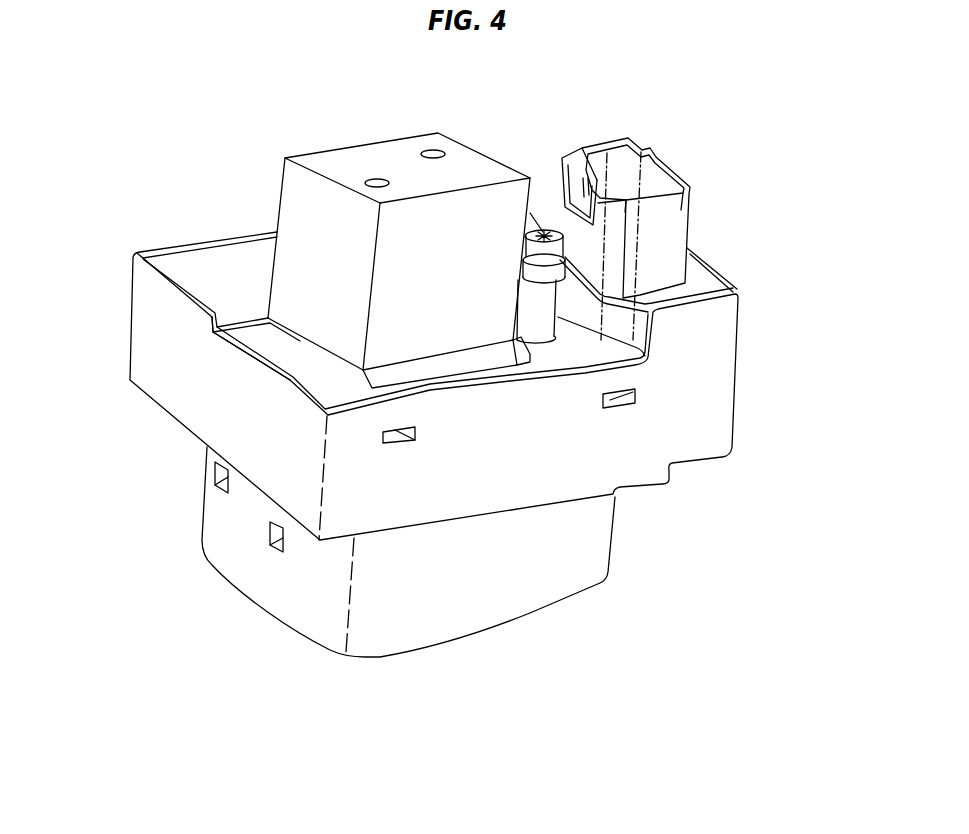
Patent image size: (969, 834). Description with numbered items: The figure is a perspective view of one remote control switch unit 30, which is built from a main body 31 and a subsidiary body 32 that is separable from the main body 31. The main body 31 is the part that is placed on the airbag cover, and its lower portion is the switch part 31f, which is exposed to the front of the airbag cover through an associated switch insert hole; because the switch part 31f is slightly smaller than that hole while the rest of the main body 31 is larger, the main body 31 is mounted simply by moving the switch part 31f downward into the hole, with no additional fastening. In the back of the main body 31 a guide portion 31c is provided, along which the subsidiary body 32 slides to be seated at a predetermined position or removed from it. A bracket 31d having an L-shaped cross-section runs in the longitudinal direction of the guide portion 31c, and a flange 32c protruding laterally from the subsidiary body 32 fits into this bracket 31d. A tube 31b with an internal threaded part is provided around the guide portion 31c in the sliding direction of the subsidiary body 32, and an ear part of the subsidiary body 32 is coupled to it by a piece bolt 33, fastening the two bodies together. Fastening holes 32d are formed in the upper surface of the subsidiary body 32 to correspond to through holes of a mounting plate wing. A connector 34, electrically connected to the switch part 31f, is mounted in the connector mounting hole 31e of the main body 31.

The remote control switch unit 30 is at (757, 402).
The main body 31 is at (717, 367).
The tube 31b is at (540, 312).
The guide portion 31c is at (235, 346).
The bracket 31d is at (407, 390).
The connector mounting hole 31e is at (690, 280).
The switch part 31f is at (568, 555).
The subsidiary body 32 is at (288, 248).
The flange 32c is at (360, 373).
The fastening holes 32d is at (431, 151).
The piece bolt 33 is at (543, 230).
The connector 34 is at (673, 224).